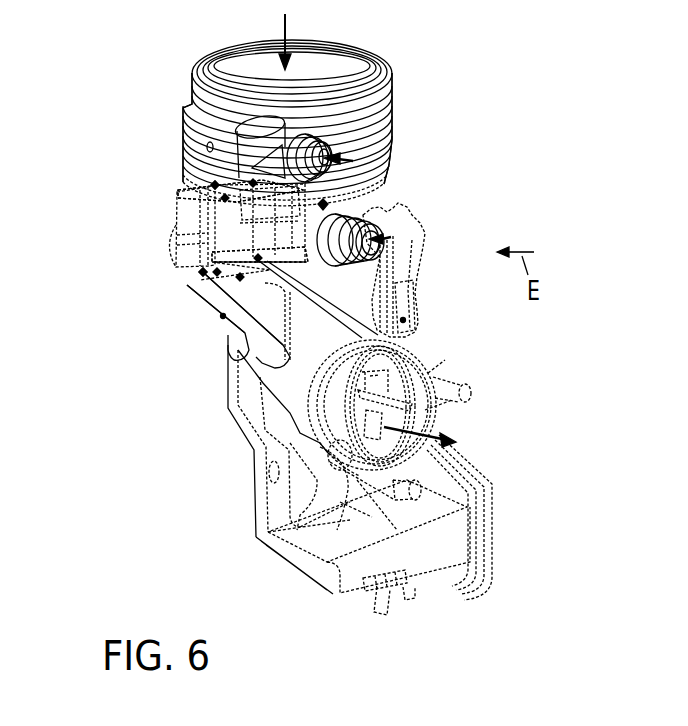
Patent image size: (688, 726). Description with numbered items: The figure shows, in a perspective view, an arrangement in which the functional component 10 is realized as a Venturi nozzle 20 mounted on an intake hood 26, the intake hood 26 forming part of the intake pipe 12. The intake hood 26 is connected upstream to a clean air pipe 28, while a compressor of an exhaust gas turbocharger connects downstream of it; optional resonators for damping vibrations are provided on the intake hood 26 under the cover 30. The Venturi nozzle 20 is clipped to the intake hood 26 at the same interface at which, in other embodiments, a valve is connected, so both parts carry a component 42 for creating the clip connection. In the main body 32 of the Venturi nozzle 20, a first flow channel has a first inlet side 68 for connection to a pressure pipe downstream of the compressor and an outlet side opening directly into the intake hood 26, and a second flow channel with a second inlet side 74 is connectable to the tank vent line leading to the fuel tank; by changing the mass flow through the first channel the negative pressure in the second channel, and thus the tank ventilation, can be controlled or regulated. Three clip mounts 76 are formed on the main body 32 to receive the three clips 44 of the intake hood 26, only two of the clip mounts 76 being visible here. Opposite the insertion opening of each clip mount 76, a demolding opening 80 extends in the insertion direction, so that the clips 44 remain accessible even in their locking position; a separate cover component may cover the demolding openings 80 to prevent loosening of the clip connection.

The functional component 10 is at (327, 203).
The Venturi nozzle 20 is at (327, 203).
The clean air pipe 28 is at (194, 86).
The second inlet side 74 is at (354, 162).
The first inlet side 68 is at (391, 235).
The cover 30 is at (406, 321).
The demolding opening 80 is at (255, 181).
The main body 32 is at (205, 248).
The component for creating the clip connection 42 is at (205, 186).
The clip mounts 76 is at (205, 186).
The clips 44 is at (178, 198).
The intake pipe 12 is at (223, 316).
The intake hood 26 is at (223, 316).